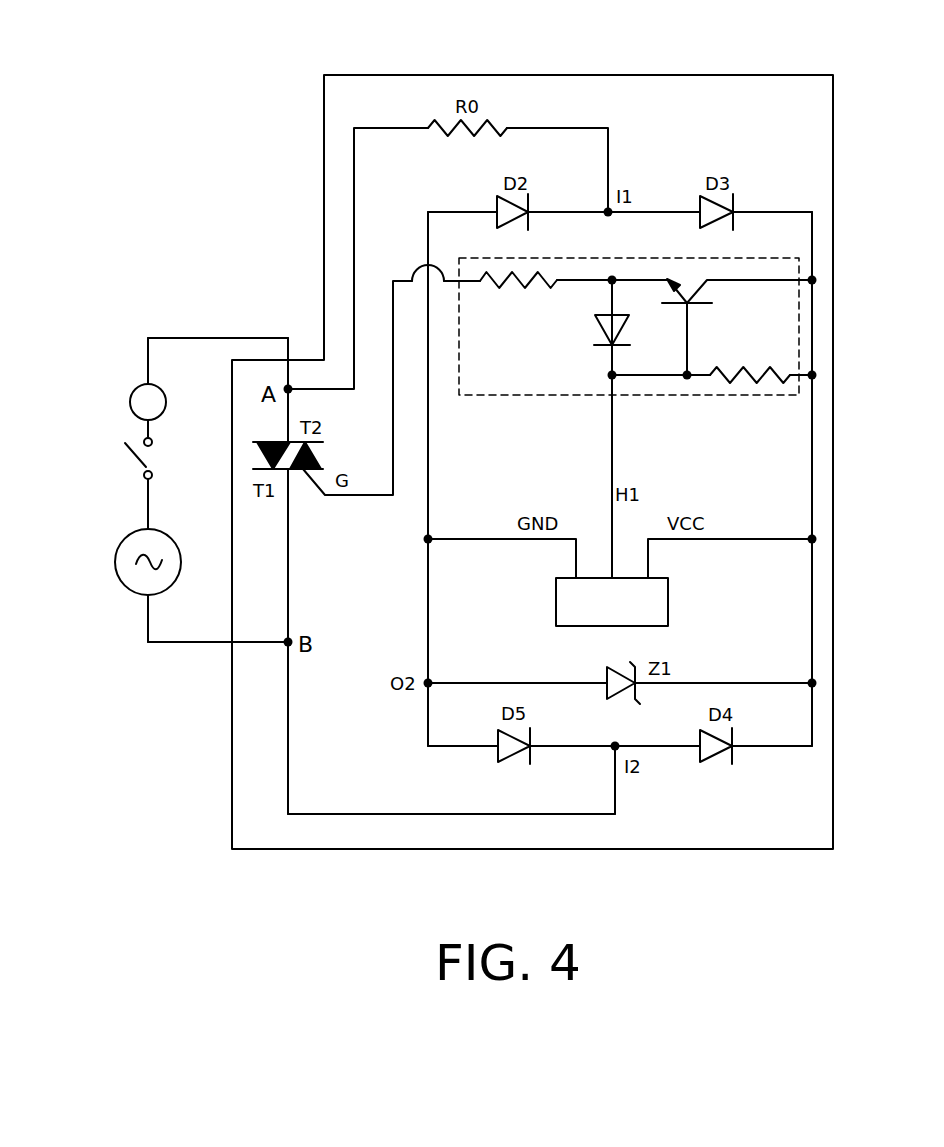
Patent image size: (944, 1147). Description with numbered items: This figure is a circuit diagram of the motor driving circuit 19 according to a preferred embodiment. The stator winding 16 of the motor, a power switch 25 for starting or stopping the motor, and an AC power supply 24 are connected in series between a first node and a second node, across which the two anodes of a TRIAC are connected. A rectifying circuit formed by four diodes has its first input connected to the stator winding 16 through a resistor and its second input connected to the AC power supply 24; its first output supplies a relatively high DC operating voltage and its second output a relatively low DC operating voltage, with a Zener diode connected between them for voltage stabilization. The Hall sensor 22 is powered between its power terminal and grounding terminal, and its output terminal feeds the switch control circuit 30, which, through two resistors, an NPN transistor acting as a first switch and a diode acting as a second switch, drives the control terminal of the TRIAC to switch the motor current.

The stator winding 16 is at (131, 392).
The motor driving circuit 19 is at (577, 75).
The Hall sensor 22 is at (668, 605).
The AC power supply 24 is at (132, 592).
The power switch 25 is at (133, 457).
The switch control circuit 30 is at (543, 397).